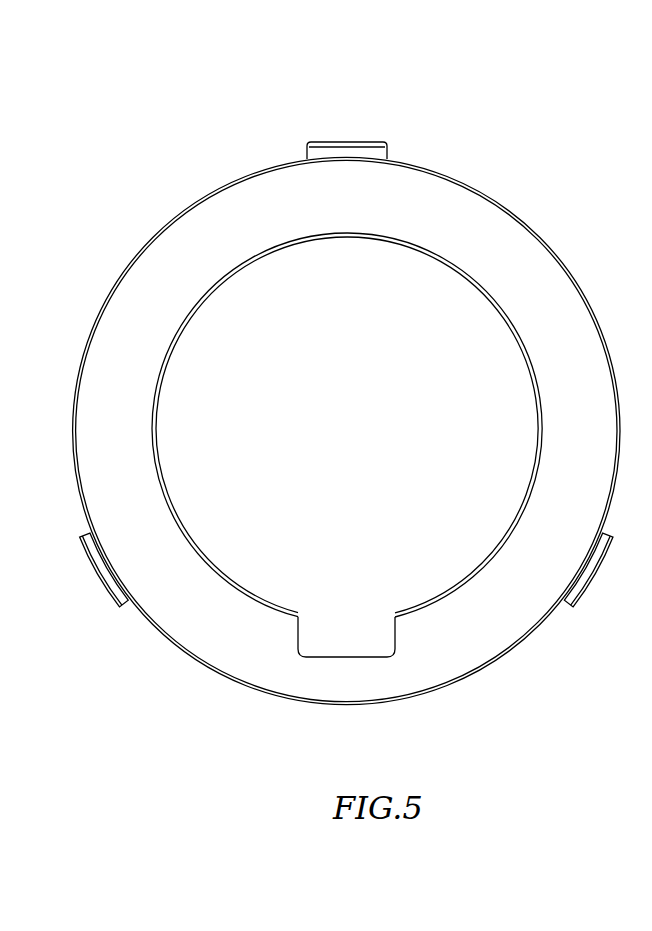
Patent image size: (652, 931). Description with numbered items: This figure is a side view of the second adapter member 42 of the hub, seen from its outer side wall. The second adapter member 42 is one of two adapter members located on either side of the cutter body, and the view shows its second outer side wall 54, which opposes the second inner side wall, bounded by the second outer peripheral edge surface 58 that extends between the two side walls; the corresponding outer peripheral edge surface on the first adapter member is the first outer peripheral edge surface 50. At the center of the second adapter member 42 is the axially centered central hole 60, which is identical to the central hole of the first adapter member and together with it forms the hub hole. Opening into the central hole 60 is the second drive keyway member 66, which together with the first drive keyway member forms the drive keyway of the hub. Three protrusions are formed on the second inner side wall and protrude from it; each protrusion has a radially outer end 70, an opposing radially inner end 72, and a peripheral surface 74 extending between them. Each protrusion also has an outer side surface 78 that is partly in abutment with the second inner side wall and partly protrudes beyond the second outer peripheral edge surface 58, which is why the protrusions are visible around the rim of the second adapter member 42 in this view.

The second adapter member 42 is at (110, 172).
The first outer peripheral edge surface 50 is at (5, 305).
The second outer side wall 54 is at (583, 360).
The second outer peripheral edge surface 58 is at (237, 177).
The central hole 60 is at (463, 302).
The second drive keyway member 66 is at (315, 641).
The radially outer end 70 is at (103, 580).
The radially inner end 72 is at (588, 570).
The peripheral surface 74 is at (86, 540).
The outer side surface 78 is at (372, 152).